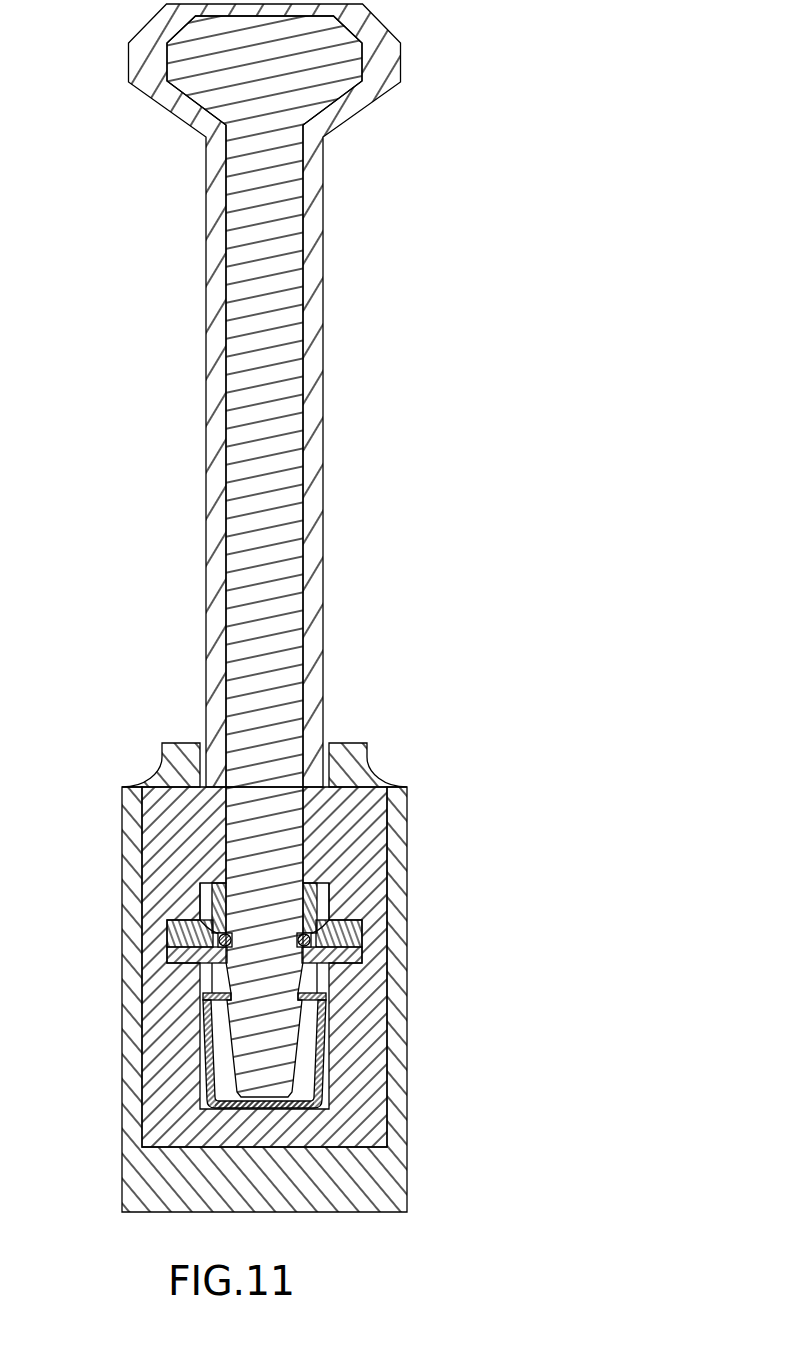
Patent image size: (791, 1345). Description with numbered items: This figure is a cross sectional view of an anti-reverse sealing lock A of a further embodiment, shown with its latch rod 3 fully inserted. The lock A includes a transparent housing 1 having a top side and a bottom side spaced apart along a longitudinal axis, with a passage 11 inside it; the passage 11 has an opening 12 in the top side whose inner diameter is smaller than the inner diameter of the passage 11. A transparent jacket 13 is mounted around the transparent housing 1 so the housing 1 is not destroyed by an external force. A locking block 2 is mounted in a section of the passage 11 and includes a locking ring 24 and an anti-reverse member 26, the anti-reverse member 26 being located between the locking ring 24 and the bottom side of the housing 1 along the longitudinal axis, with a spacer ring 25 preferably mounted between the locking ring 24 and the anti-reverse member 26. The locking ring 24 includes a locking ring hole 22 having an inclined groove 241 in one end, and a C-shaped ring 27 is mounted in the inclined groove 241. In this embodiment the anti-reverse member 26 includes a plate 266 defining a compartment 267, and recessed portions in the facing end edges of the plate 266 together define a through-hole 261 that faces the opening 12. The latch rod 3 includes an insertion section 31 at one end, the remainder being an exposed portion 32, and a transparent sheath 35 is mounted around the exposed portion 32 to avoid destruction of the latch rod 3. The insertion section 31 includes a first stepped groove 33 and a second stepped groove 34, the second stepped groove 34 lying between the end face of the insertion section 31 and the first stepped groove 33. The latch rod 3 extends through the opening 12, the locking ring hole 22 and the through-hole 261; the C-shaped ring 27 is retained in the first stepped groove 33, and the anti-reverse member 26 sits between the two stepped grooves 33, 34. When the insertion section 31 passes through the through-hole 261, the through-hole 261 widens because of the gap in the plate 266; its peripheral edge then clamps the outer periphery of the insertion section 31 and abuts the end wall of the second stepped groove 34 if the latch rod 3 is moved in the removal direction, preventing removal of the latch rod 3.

The anti-reverse sealing lock A is at (489, 210).
The transparent housing 1 is at (387, 1060).
The passage 11 is at (320, 1092).
The opening 12 is at (225, 775).
The transparent jacket 13 is at (407, 1103).
The locking block 2 is at (382, 923).
The locking ring hole 22 is at (310, 884).
The locking ring 24 is at (177, 937).
The inclined groove 241 is at (212, 918).
The spacer ring 25 is at (350, 953).
The anti-reverse member 26 is at (204, 1057).
The through-hole 261 is at (200, 985).
The plate 266 is at (203, 1028).
The compartment 267 is at (212, 1108).
The C-shaped ring 27 is at (222, 934).
The latch rod 3 is at (323, 394).
The insertion section 31 is at (268, 842).
The exposed portion 32 is at (226, 242).
The first stepped groove 33 is at (318, 915).
The second stepped groove 34 is at (320, 995).
The transparent sheath 35 is at (217, 528).